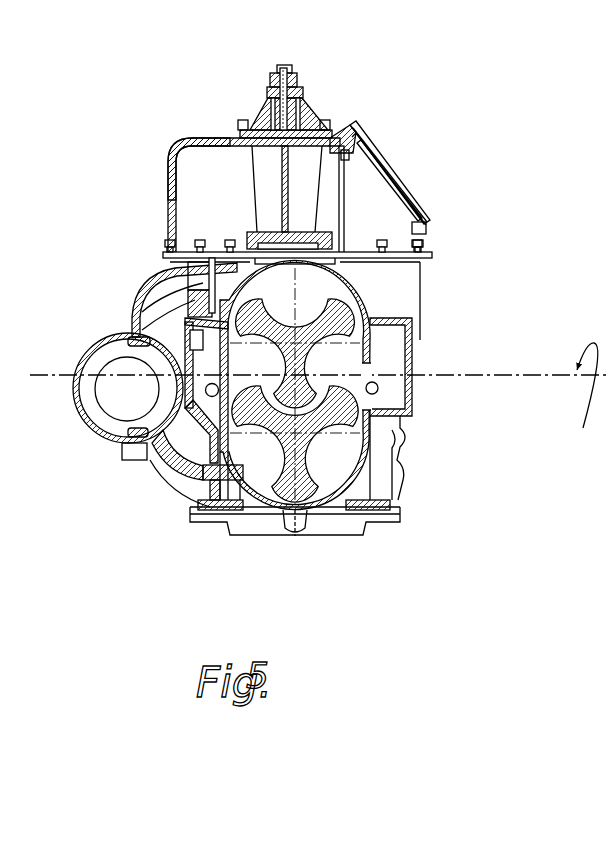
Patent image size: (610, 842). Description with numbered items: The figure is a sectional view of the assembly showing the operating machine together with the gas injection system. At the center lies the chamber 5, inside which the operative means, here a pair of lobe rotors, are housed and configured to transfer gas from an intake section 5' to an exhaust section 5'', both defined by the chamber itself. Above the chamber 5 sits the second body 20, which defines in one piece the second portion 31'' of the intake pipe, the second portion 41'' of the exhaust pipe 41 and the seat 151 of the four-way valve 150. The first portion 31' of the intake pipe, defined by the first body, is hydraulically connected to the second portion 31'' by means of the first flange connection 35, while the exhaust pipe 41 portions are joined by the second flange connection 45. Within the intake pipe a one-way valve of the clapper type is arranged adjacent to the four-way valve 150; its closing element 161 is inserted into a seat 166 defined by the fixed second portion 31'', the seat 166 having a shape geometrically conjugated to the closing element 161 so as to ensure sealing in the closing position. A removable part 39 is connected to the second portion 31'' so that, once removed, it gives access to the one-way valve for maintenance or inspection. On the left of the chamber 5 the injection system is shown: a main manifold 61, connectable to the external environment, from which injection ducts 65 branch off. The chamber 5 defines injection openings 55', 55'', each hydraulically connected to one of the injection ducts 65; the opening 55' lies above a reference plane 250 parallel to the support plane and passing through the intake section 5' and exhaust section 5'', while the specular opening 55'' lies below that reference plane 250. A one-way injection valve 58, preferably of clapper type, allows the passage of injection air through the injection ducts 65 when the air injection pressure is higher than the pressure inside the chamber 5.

The chamber 5 is at (321, 398).
The intake section 5' is at (426, 368).
The exhaust section 5'' is at (167, 493).
The second body 20 is at (162, 195).
The first portion of the intake pipe 31' is at (472, 303).
The second portion of the intake pipe 31'' is at (471, 245).
The first flange connection 35 is at (432, 262).
The removable part 39 is at (390, 145).
The exhaust pipe 41 is at (154, 427).
The second portion of the exhaust pipe 41'' is at (177, 141).
The second flange connection 45 is at (158, 252).
The injection opening 55' is at (142, 290).
The injection opening 55'' is at (232, 533).
The one-way injection valve 58 is at (112, 395).
The main manifold 61 is at (78, 367).
The injection ducts 65 is at (143, 292).
The four-way valve 150 is at (318, 113).
The seat 151 is at (277, 178).
The closing element 161 is at (408, 168).
The seat 166 is at (350, 201).
The reference plane 250 is at (578, 400).